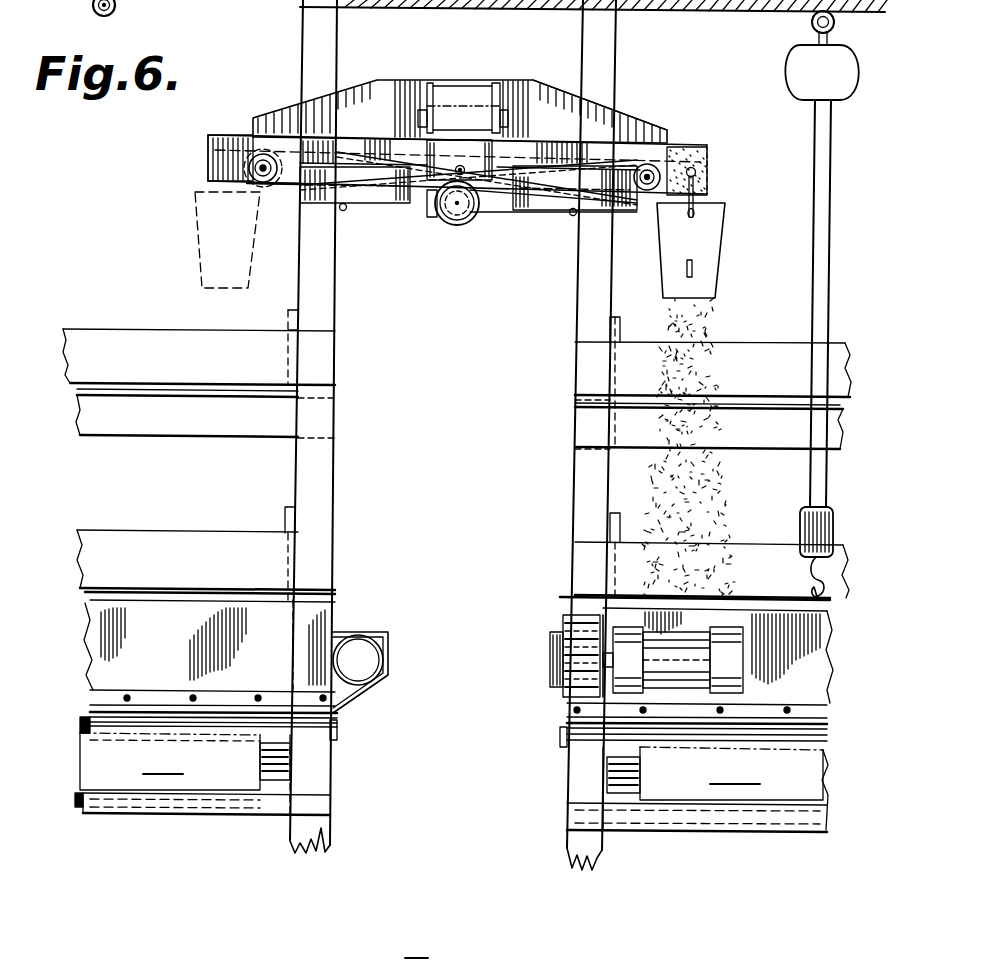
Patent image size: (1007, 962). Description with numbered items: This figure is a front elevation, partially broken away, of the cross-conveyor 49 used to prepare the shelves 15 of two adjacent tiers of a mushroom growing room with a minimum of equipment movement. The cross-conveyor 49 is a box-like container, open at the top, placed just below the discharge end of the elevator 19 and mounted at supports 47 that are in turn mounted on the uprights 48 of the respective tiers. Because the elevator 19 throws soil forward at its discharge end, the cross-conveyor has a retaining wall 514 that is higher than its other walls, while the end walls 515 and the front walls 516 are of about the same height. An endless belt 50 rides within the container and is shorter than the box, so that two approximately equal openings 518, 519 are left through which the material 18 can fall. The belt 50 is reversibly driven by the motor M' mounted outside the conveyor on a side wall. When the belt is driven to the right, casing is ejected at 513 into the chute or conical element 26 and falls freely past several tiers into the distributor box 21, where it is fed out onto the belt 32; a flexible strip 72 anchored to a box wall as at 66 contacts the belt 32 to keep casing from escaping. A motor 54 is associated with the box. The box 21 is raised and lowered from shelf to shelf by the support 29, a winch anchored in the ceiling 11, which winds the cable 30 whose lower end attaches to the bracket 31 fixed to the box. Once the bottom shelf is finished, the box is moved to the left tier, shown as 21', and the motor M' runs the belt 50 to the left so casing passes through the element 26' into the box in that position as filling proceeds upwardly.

The ceiling 11 is at (763, 4).
The shelves 15 is at (175, 522).
The material 18 is at (700, 322).
The elevator 19 is at (505, 90).
The distributor box 21 is at (620, 647).
The distributor box in upward processing position 21' is at (394, 651).
The chute or conical element 26 is at (721, 250).
The chute element at opposite end 26' is at (195, 240).
The support 29 is at (823, 72).
The cable 30 is at (833, 313).
The bracket 31 is at (825, 575).
The belt 32 is at (451, 782).
The supports 47 is at (343, 210).
The uprights 48 is at (323, 293).
The cross-conveyor 49 is at (375, 79).
The endless belt 50 is at (423, 172).
The motor 54 is at (360, 663).
The anchor point of flexible strip 66 is at (810, 713).
The flexible strip 72 is at (823, 727).
The motor M' is at (532, 223).
The ejection point 513 is at (707, 197).
The retaining wall 514 is at (613, 128).
The end walls 515 is at (208, 163).
The front walls 516 is at (513, 150).
The opening 518 is at (690, 153).
The opening 519 is at (238, 133).